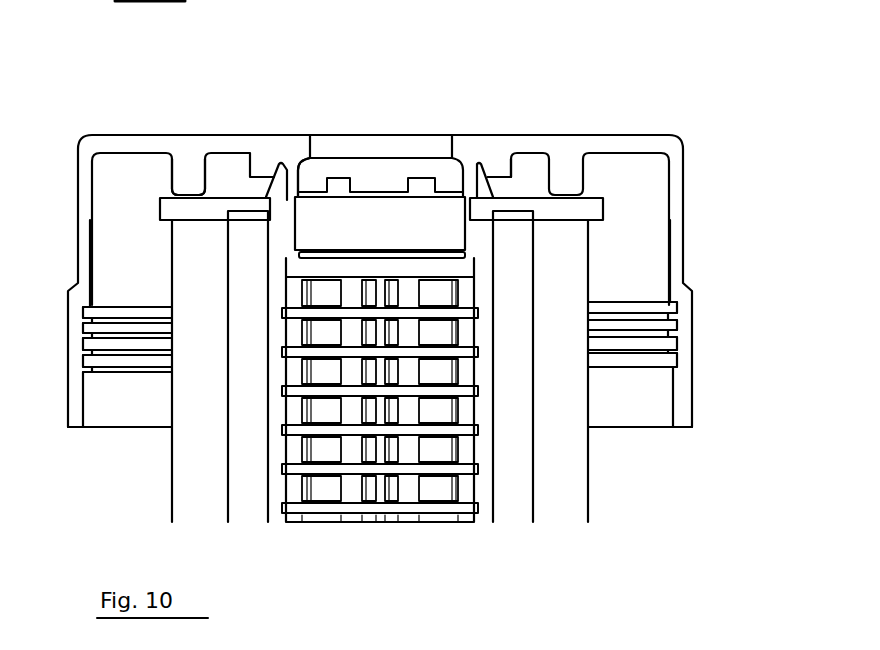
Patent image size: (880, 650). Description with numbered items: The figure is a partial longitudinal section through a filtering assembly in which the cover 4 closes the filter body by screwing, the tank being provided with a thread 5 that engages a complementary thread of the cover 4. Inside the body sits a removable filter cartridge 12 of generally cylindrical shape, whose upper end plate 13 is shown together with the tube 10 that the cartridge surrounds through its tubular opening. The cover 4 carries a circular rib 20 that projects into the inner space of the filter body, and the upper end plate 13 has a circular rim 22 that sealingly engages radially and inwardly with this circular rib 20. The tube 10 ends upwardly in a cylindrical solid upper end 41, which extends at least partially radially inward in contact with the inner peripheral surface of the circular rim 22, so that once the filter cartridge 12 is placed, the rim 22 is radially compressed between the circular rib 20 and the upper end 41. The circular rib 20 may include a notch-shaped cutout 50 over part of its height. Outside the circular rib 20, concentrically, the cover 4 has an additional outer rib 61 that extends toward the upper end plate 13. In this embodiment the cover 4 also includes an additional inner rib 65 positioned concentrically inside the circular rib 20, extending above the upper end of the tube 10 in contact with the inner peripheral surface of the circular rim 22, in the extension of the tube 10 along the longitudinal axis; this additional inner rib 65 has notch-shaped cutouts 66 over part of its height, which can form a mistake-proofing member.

The cover 4 is at (628, 143).
The thread 5 is at (676, 312).
The tube 10 is at (412, 488).
The filter cartridge 12 is at (556, 445).
The upper end plate 13 is at (548, 212).
The circular rib 20 is at (265, 163).
The circular rim 22 is at (283, 163).
The upper end 41 is at (493, 187).
The cutout 50 is at (502, 183).
The additional outer rib 61 is at (192, 180).
The additional inner rib 65 is at (310, 158).
The cutout 66 is at (333, 182).